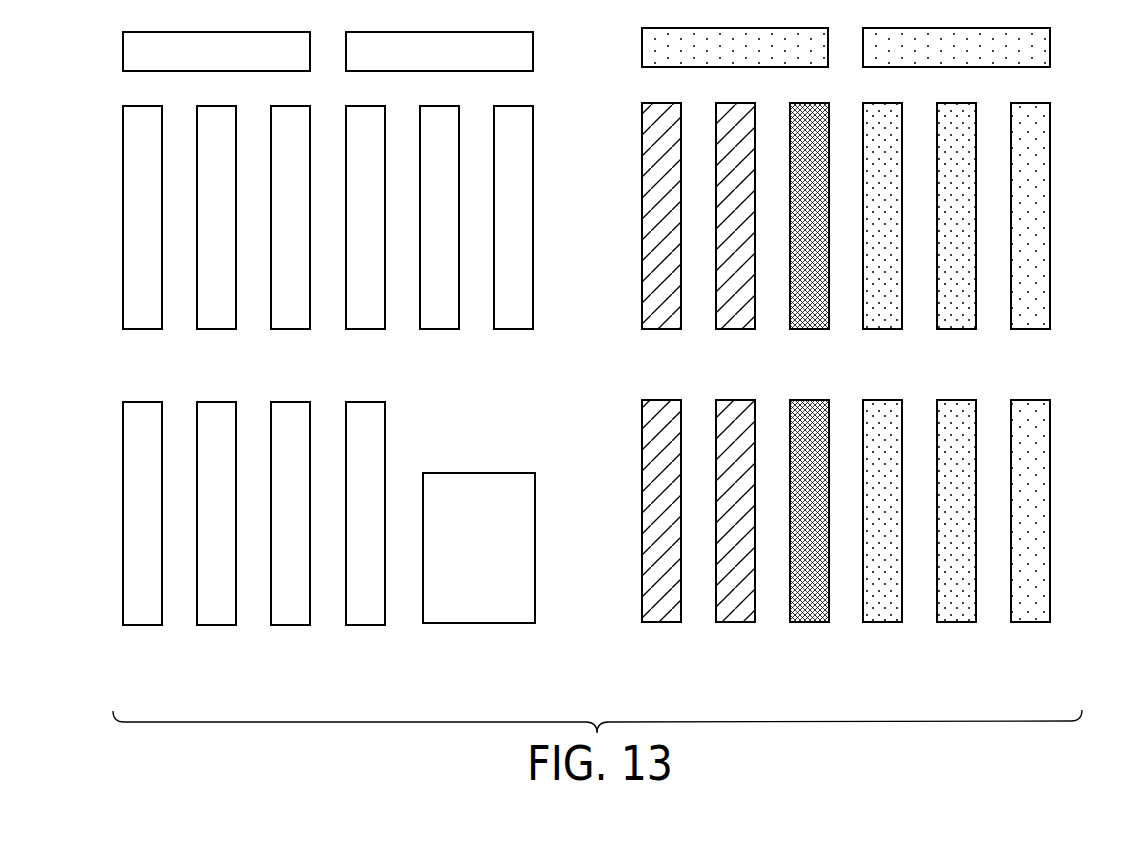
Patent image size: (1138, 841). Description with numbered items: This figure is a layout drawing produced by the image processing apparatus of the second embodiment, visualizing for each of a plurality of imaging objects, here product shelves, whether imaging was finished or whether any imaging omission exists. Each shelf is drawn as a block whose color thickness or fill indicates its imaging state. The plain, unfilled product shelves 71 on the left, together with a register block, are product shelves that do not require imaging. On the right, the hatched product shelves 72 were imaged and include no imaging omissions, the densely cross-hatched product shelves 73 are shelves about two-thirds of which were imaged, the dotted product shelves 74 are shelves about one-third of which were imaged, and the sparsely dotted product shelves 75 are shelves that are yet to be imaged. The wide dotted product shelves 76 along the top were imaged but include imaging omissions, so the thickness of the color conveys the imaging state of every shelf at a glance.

The product shelves 71 is at (128, 642).
The product shelves 72 is at (645, 640).
The product shelves 73 is at (792, 640).
The product shelves 74 is at (867, 640).
The product shelves 75 is at (1015, 640).
The product shelves 76 is at (1063, 25).